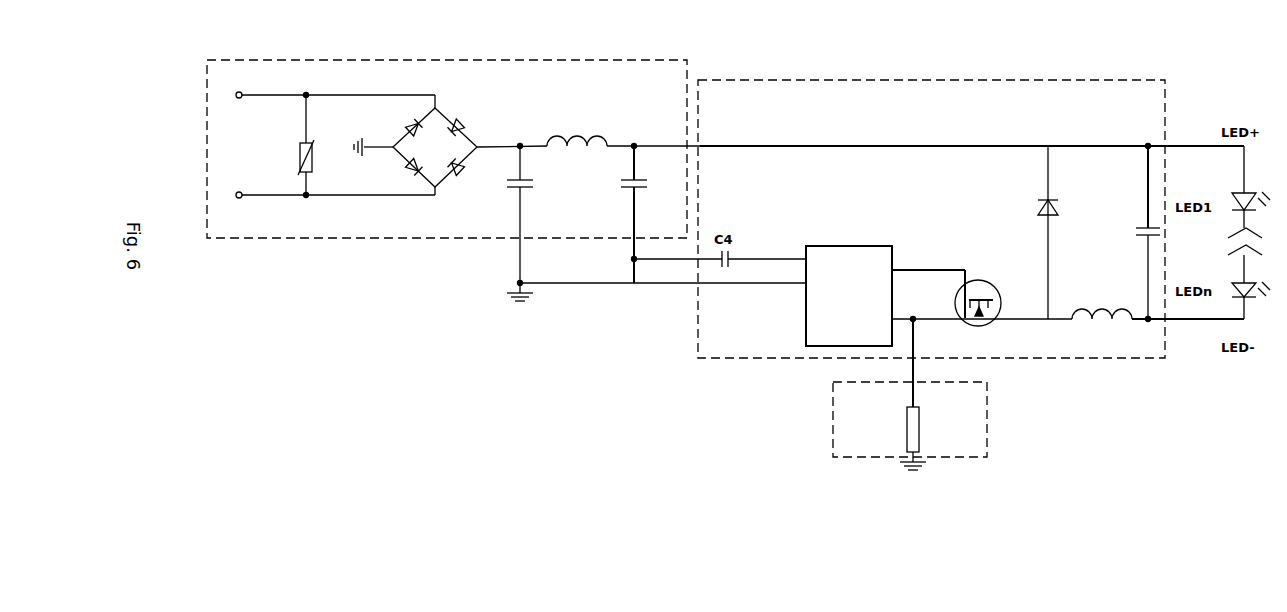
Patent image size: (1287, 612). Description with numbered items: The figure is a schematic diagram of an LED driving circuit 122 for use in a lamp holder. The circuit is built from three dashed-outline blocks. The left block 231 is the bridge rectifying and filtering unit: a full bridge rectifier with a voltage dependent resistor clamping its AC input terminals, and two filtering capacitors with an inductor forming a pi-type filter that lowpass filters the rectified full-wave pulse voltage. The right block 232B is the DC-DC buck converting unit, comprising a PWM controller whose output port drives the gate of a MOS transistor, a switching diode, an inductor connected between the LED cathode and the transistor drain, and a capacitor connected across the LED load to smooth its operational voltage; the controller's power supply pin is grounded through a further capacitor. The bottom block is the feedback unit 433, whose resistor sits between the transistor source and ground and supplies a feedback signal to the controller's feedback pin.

The rectifier and filter input module 231 is at (627, 60).
The LED driver module 232B is at (1100, 73).
The feedback unit 433 is at (973, 459).
The LED driving circuit 122 is at (1120, 463).